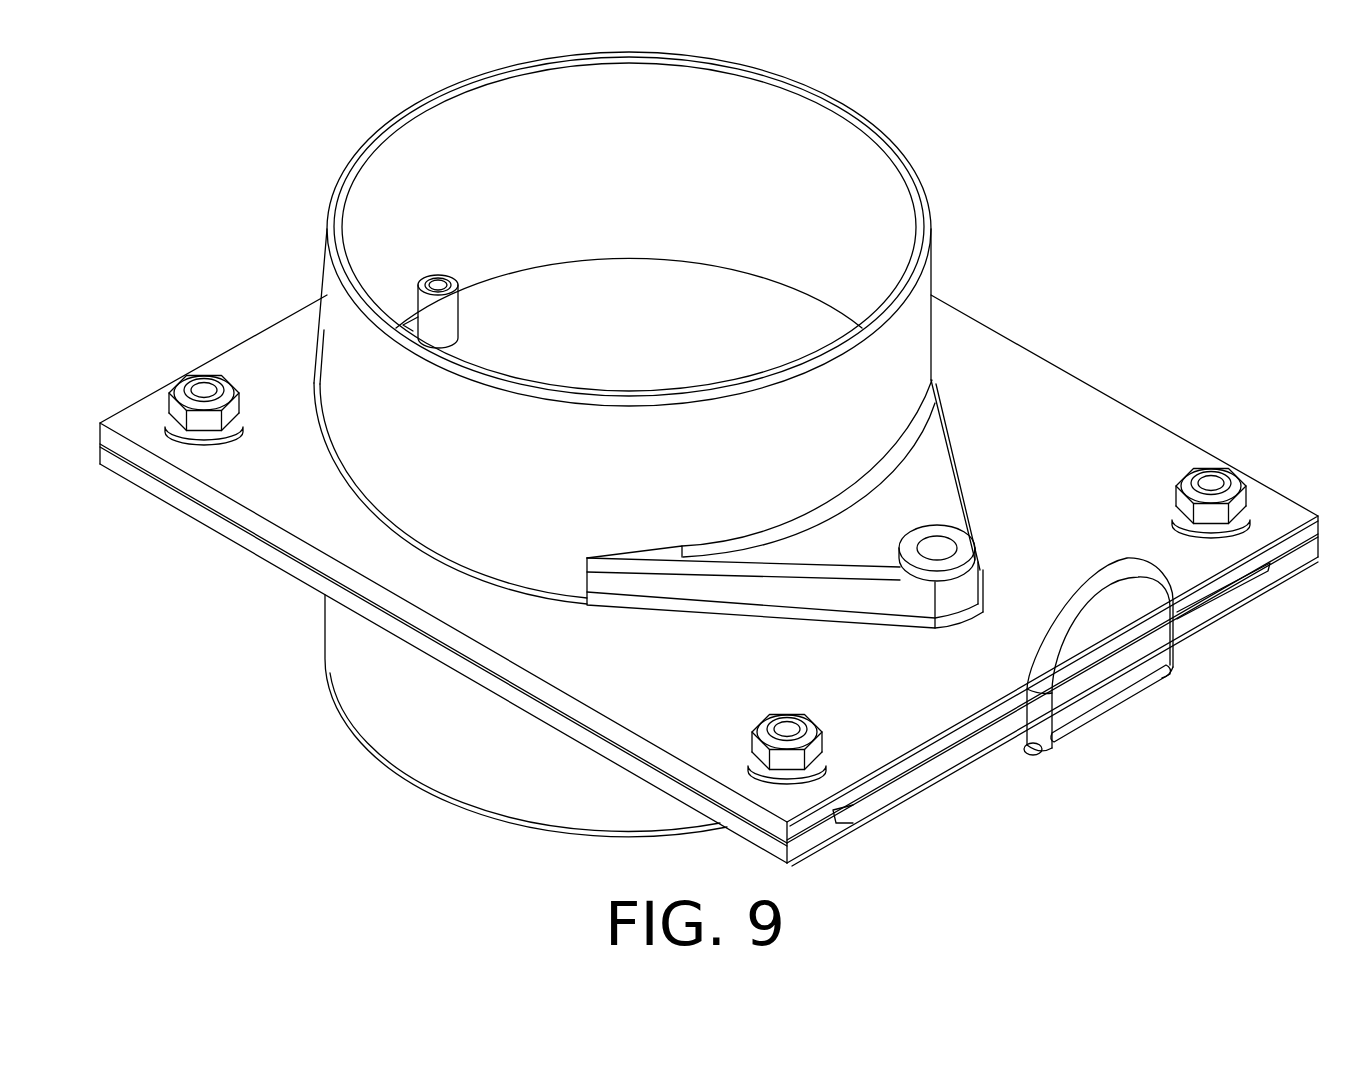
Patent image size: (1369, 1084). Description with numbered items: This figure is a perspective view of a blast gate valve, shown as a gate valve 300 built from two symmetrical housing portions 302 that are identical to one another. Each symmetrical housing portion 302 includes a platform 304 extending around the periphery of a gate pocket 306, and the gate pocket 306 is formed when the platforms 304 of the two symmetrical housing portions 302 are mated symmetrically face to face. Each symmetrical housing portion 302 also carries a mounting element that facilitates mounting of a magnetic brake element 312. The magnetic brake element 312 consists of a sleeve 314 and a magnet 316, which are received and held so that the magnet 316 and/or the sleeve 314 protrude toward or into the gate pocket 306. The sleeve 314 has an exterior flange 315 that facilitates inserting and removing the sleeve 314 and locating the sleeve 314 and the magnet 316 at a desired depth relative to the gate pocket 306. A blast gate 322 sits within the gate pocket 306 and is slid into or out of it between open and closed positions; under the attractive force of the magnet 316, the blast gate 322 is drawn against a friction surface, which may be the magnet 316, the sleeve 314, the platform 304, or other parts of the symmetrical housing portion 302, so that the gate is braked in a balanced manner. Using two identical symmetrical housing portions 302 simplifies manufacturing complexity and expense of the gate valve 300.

The gate valve 300 is at (1090, 237).
The symmetrical housing portion 302 is at (327, 268).
The platform 304 is at (222, 352).
The gate pocket 306 is at (856, 816).
The magnetic brake element 312 is at (978, 532).
The sleeve 314 is at (913, 527).
The exterior flange 315 is at (983, 612).
The magnet 316 is at (937, 534).
The blast gate 322 is at (1192, 622).